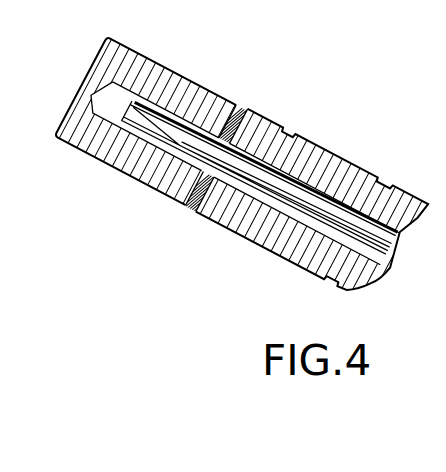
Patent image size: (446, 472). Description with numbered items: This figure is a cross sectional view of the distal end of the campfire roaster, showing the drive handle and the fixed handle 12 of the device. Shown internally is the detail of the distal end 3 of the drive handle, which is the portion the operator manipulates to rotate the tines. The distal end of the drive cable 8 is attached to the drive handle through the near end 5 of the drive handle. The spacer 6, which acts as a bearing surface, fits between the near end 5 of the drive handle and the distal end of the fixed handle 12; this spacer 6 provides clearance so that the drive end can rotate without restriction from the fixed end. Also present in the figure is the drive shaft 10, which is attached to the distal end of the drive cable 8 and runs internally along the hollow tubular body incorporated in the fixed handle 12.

The distal end of drive handle 3 is at (77, 83).
The near end of drive handle 5 is at (190, 210).
The spacer 6 is at (238, 108).
The drive cable 8 is at (232, 185).
The drive shaft 10 is at (377, 240).
The fixed handle 12 is at (320, 150).